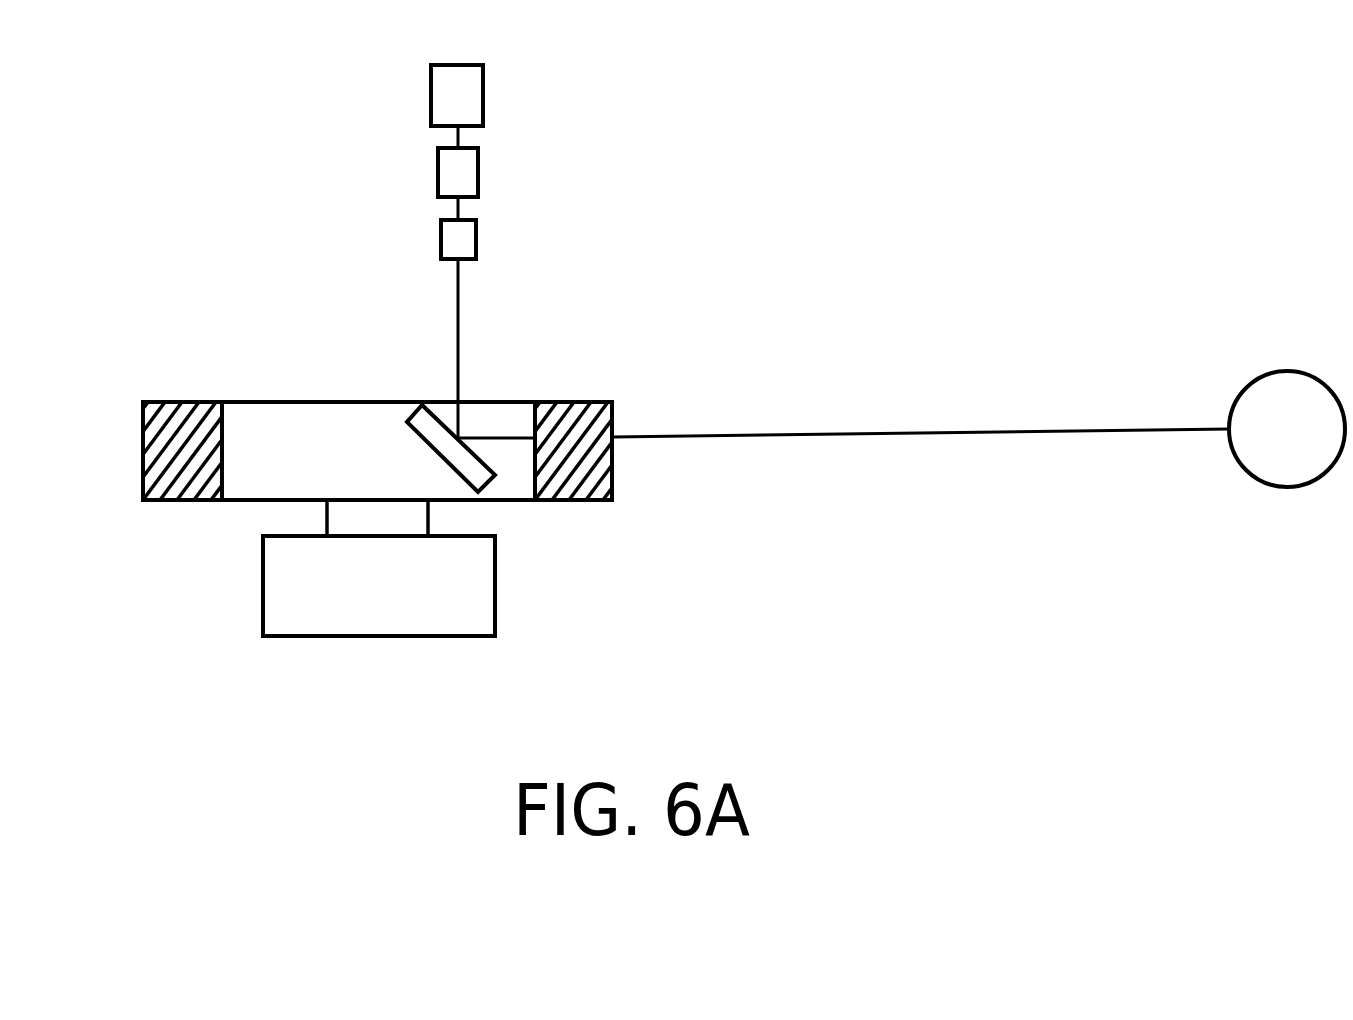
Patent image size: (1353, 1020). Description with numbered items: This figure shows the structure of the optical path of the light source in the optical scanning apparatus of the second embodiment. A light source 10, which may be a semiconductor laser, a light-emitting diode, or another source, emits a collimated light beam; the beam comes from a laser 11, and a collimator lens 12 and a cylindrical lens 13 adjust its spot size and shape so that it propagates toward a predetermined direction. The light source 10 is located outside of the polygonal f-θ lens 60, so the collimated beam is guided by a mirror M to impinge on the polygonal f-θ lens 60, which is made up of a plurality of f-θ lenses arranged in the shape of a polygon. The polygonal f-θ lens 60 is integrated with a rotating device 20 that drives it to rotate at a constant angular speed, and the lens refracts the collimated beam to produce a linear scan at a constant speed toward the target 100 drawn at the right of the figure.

The light source 10 is at (285, 72).
The laser 11 is at (431, 92).
The collimator lens 12 is at (438, 173).
The cylindrical lens 13 is at (441, 240).
The mirror M is at (425, 403).
The polygonal f-θ lens 60 is at (575, 412).
The rotating device 20 is at (473, 585).
The eye 100 is at (1287, 369).